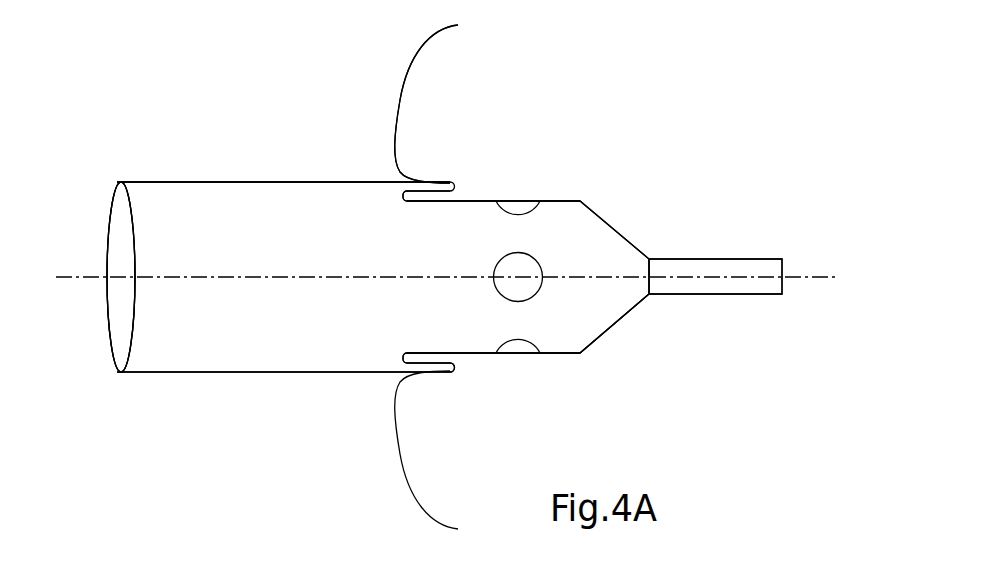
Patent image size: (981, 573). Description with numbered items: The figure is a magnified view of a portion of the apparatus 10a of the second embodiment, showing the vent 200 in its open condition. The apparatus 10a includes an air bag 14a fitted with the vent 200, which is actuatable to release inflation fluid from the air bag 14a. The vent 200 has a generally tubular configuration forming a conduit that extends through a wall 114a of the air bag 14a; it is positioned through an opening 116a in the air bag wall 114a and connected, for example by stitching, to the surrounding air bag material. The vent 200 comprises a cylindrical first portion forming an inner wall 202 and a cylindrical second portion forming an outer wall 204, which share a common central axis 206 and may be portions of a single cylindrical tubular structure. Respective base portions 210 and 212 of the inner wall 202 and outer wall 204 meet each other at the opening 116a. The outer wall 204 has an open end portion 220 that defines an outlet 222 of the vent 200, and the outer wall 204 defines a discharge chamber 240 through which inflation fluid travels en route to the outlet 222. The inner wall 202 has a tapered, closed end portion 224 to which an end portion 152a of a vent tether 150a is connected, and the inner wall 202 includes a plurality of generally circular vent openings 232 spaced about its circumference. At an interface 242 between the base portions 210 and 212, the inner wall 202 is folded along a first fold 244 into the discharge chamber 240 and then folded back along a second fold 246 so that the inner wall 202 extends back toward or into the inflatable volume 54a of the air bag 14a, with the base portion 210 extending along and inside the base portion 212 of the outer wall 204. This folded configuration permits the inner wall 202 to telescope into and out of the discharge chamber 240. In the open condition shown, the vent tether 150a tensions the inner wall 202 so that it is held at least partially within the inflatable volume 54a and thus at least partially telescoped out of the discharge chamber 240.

The apparatus 10a is at (315, 136).
The air bag 14a is at (404, 87).
The air bag wall 114a is at (423, 42).
The opening 116a is at (454, 334).
The inflatable volume 54a is at (518, 65).
The vent 200 is at (239, 168).
The inner wall 202 is at (475, 212).
The outer wall 204 is at (149, 357).
The central axis 206 is at (74, 276).
The base portion of the inner wall 210 is at (410, 333).
The base portion of the outer wall 212 is at (390, 364).
The open end portion 220 is at (147, 200).
The outlet 222 is at (116, 309).
The closed end portion 224 is at (603, 298).
The vent openings 232 is at (523, 208).
The discharge chamber 240 is at (263, 222).
The interface 242 is at (434, 341).
The first fold 244 is at (453, 185).
The second fold 246 is at (402, 200).
The vent tether 150a is at (745, 266).
The end portion of the vent tether 152a is at (670, 266).